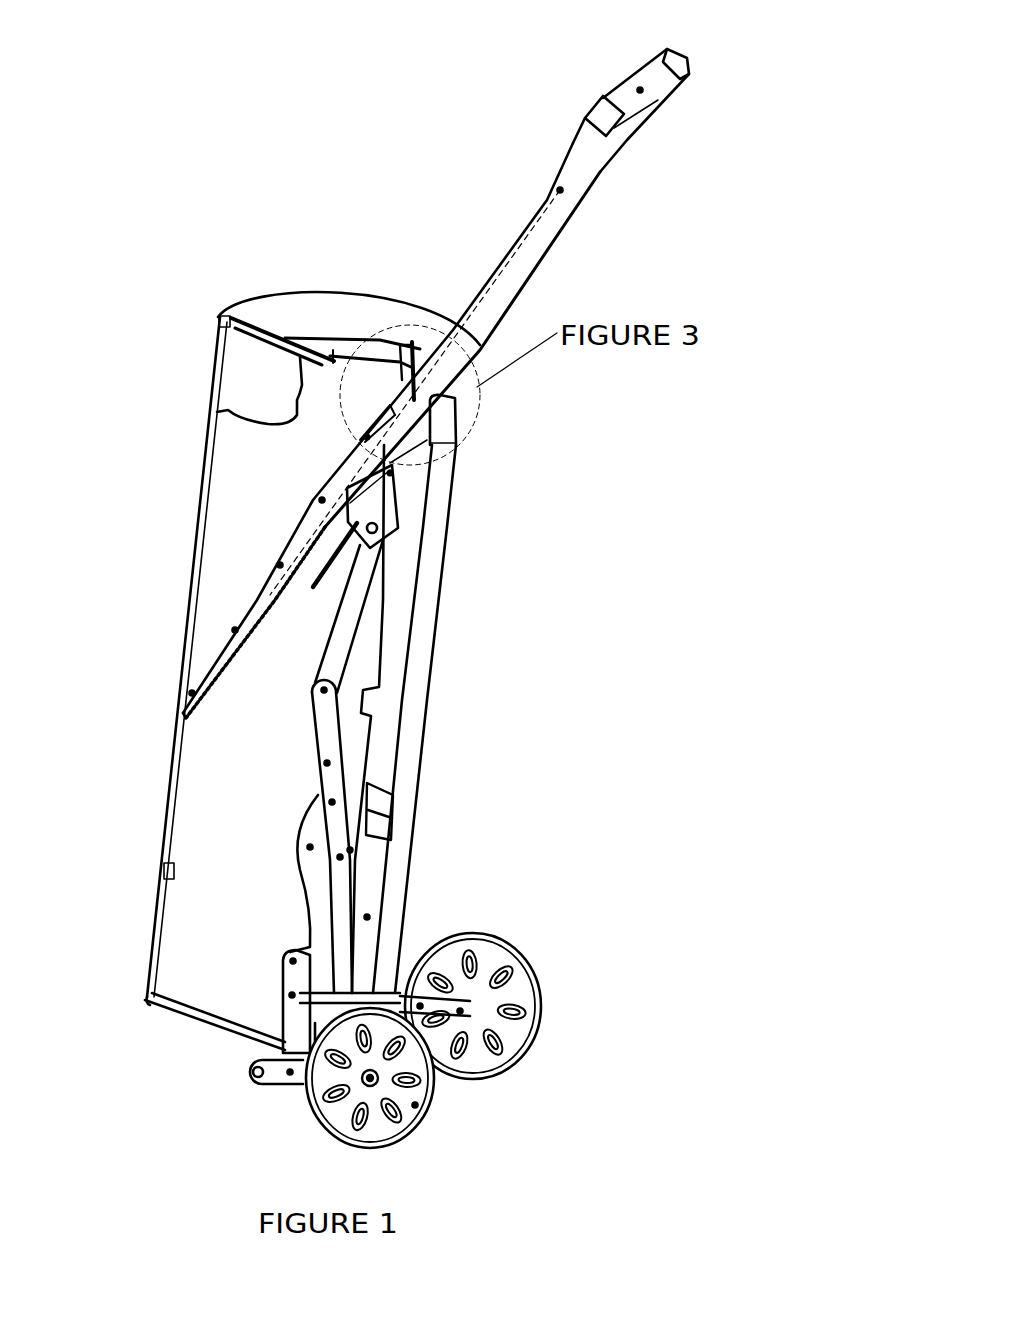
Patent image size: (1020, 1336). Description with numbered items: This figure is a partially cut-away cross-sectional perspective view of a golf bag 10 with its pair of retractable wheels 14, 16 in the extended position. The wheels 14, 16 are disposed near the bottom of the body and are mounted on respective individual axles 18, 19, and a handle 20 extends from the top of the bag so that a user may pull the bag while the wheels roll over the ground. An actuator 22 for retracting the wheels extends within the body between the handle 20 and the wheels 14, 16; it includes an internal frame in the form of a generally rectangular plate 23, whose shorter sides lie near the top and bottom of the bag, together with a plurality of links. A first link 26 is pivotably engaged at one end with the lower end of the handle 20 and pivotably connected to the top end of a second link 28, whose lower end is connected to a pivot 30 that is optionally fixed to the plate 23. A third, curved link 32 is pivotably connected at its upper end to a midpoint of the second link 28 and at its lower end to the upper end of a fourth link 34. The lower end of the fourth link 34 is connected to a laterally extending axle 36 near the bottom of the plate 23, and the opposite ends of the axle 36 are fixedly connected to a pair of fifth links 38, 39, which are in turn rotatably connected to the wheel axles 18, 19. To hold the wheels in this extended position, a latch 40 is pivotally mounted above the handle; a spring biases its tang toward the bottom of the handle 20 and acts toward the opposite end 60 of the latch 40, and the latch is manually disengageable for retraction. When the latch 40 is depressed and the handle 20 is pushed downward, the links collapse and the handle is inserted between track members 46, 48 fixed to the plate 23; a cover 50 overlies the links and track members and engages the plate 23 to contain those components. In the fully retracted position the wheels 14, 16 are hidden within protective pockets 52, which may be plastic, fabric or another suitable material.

The golf bag 10 is at (512, 453).
The retractable wheel 14 is at (417, 1106).
The retractable wheel 16 is at (507, 990).
The axle 18 is at (364, 1082).
The axle 19 is at (474, 1014).
The handle 20 is at (655, 98).
The actuator 22 is at (383, 660).
The plate 23 is at (243, 470).
The first link 26 is at (355, 607).
The second link 28 is at (338, 762).
The pivot 30 is at (352, 849).
The curved link 32 is at (308, 846).
The fourth link 34 is at (286, 990).
The axle 36 is at (285, 1047).
The fifth link 38 is at (256, 1073).
The fifth link 39 is at (415, 995).
The latch 40 is at (380, 345).
The track member 46 is at (258, 593).
The track member 48 is at (380, 552).
The cover 50 is at (250, 378).
The protective pocket 52 is at (367, 917).
The opposite end of the latch 60 is at (412, 350).